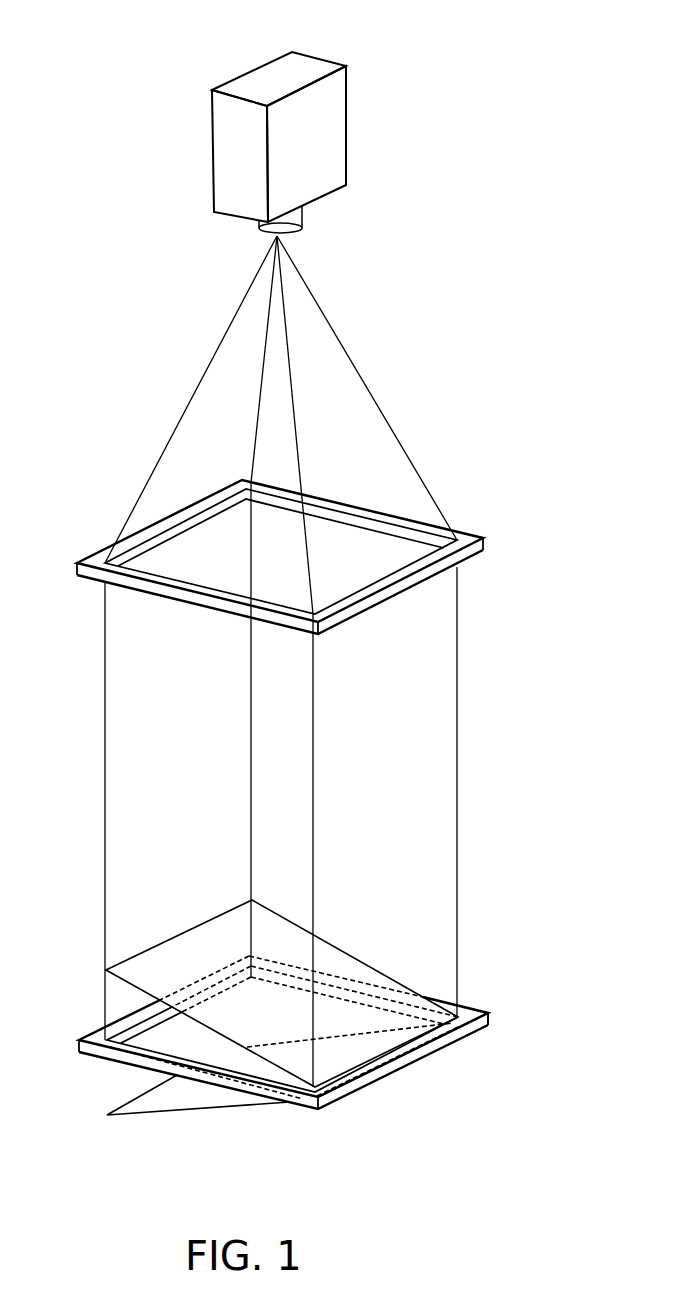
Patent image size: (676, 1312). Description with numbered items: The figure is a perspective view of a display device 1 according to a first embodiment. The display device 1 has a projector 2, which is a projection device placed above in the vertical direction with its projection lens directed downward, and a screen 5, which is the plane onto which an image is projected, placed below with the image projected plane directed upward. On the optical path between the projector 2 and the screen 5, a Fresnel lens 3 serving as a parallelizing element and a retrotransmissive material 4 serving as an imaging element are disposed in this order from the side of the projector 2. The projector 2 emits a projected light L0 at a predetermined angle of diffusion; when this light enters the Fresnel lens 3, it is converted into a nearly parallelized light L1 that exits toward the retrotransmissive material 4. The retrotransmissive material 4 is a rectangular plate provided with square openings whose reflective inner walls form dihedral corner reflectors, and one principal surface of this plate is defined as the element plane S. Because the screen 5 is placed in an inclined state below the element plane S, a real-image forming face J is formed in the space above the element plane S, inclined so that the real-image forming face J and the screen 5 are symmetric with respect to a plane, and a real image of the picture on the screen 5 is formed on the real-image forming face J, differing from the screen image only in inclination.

The display device 1 is at (163, 50).
The projector 2 is at (343, 138).
The Fresnel lens 3 is at (468, 532).
The projected light L0 is at (370, 382).
The nearly parallelized light L1 is at (457, 767).
The retrotransmissive material 4 is at (463, 1008).
The real-image forming face J is at (198, 940).
The element plane S is at (483, 1027).
The screen 5 is at (207, 1101).